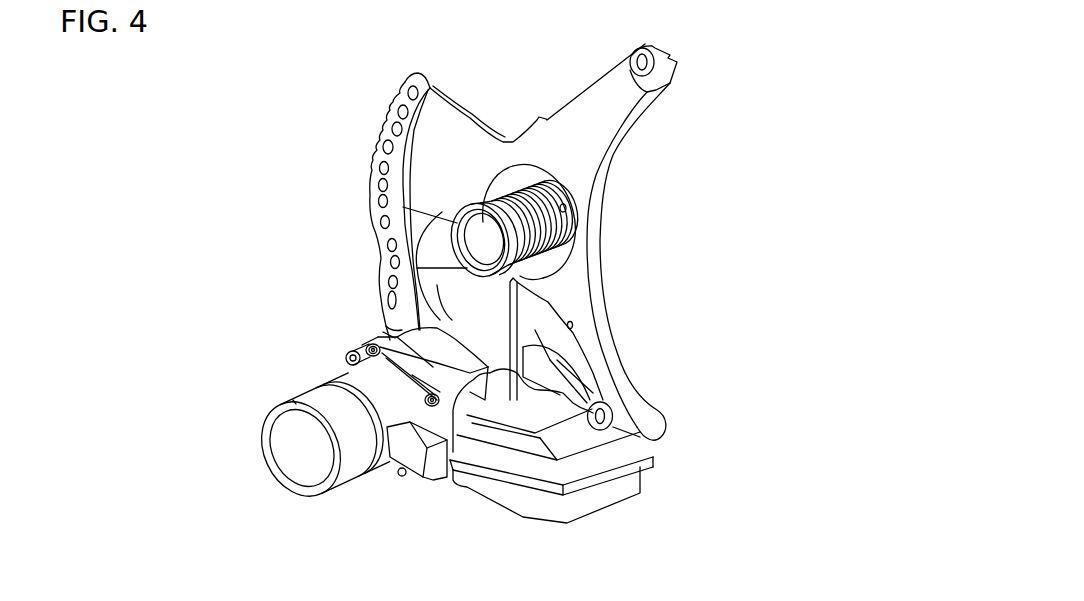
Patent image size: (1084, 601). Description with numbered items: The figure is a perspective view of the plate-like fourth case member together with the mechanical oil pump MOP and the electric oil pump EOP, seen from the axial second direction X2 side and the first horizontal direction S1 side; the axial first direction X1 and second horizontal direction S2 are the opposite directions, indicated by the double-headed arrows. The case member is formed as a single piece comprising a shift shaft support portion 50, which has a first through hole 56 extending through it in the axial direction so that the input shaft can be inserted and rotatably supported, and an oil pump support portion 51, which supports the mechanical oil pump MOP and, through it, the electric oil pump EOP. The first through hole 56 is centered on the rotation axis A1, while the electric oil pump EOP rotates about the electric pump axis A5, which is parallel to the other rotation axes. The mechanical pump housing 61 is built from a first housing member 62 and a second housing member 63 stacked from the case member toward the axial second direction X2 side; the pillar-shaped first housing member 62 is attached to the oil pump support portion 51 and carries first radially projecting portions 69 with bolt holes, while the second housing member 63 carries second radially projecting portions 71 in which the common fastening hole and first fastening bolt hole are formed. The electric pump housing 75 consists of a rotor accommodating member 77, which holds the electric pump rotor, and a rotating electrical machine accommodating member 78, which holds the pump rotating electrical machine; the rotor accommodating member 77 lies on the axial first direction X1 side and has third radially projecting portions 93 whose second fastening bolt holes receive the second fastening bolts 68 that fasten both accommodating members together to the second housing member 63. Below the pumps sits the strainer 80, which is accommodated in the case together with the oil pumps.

The shift shaft support portion 50 is at (605, 218).
The oil pump support portion 51 is at (400, 268).
The first through hole 56 is at (475, 268).
The mechanical pump housing 61 is at (345, 300).
The first housing member 62 is at (383, 332).
The second housing member 63 is at (368, 338).
The second fastening bolts 68 is at (366, 348).
The first radially projecting portions 69 is at (483, 344).
The second radially projecting portions 71 is at (415, 350).
The electric pump housing 75 is at (294, 355).
The rotor accommodating member 77 is at (348, 347).
The rotating electrical machine accommodating member 78 is at (293, 407).
The strainer 80 is at (498, 468).
The third radially projecting portions 93 is at (375, 367).
The rotation axis A1 is at (486, 242).
The electric pump axis A5 is at (335, 432).
The electric oil pump EOP is at (267, 403).
The mechanical oil pump MOP is at (545, 318).
The first horizontal direction S1 is at (123, 470).
The second horizontal direction S2 is at (129, 479).
The axial first direction X1 is at (683, 490).
The axial second direction X2 is at (689, 482).